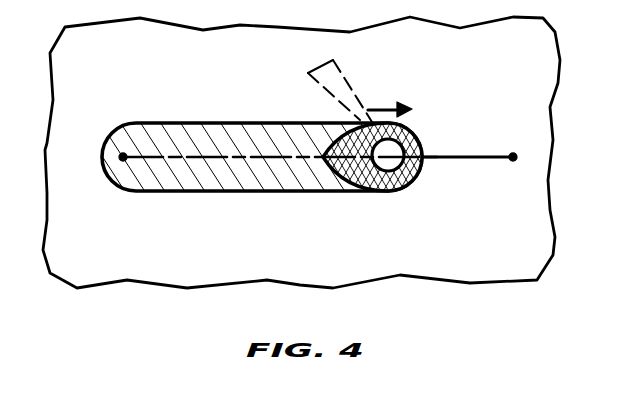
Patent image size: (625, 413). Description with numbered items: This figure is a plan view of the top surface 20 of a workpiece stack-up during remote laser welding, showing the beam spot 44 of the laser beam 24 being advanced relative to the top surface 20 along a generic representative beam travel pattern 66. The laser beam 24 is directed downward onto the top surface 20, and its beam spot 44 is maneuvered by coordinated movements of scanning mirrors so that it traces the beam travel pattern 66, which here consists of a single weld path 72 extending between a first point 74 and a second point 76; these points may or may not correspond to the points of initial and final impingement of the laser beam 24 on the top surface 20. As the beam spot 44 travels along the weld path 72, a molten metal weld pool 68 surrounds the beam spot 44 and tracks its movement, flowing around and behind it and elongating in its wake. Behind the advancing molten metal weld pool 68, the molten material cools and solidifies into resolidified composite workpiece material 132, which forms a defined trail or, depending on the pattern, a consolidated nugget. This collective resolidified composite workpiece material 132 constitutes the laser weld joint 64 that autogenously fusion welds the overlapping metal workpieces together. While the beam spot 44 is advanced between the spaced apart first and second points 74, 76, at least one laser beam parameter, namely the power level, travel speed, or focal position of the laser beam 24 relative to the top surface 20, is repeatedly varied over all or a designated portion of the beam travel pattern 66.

The top surface 20 is at (318, 262).
The laser beam 24 is at (342, 83).
The beam spot 44 is at (388, 165).
The laser weld joint 64 is at (182, 122).
The beam travel pattern 66 is at (454, 159).
The molten metal weld pool 68 is at (408, 121).
The weld path 72 is at (225, 153).
The first point 74 is at (121, 155).
The second point 76 is at (513, 153).
The resolidified composite workpiece material 132 is at (222, 132).